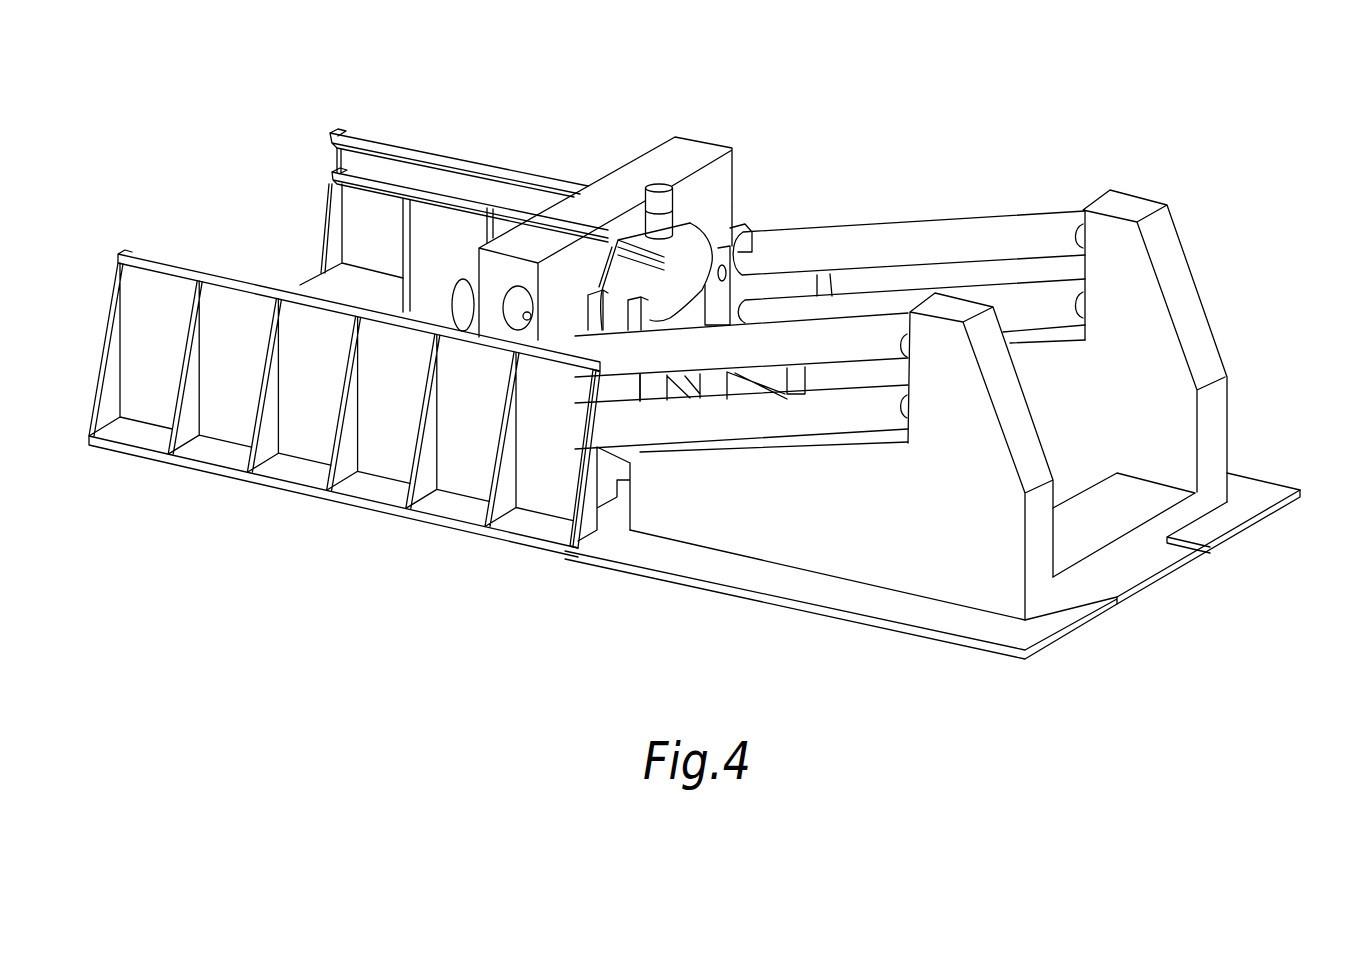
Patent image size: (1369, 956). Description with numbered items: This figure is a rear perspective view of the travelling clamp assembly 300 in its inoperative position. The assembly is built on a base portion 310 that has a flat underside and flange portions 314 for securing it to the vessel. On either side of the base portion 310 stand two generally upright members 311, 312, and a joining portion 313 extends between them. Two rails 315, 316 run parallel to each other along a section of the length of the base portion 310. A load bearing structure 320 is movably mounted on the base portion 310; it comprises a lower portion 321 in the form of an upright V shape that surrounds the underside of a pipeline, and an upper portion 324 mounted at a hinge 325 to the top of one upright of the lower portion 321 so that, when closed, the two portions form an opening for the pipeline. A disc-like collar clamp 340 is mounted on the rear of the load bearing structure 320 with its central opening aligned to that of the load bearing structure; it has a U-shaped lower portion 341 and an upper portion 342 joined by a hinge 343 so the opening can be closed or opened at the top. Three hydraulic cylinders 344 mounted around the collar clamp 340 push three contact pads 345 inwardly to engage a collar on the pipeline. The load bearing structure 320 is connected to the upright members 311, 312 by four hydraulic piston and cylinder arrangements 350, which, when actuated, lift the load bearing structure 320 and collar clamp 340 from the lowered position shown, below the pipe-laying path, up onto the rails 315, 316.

The travelling clamp assembly 300 is at (358, 128).
The base portion 310 is at (1135, 565).
The first upright member 311 is at (967, 582).
The second upright member 312 is at (1198, 347).
The joining portion 313 is at (1147, 537).
The flange portions 314 is at (1253, 490).
The rail 315 is at (222, 266).
The rail 316 is at (470, 186).
The load bearing structure 320 is at (688, 136).
The lower portion 321 is at (740, 236).
The upper portion 324 is at (723, 176).
The hinge 325 is at (524, 318).
The collar clamp 340 is at (600, 256).
The lower portion 341 is at (722, 292).
The upper portion 342 is at (700, 250).
The hinge 343 is at (648, 330).
The hydraulic cylinders 344 is at (663, 202).
The contact pads 345 is at (683, 396).
The hydraulic piston and cylinder arrangements 350 is at (980, 237).